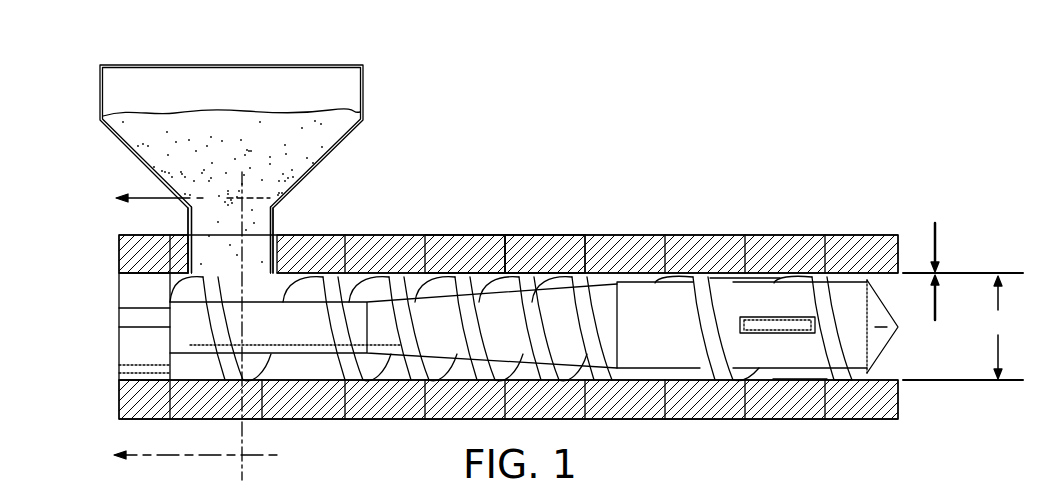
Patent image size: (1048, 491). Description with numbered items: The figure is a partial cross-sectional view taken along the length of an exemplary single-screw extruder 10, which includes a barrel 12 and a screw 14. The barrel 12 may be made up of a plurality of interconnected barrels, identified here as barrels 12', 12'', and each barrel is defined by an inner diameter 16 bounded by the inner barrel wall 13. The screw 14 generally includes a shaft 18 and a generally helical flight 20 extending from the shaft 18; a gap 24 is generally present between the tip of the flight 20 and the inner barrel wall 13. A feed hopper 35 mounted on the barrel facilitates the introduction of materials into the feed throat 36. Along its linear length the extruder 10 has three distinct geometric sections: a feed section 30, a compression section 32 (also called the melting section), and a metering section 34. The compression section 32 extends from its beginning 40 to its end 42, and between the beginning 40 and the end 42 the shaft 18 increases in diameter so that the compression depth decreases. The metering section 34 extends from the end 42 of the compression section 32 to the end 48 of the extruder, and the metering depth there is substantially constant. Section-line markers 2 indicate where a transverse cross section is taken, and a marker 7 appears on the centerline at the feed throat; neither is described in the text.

The extruder 10 is at (783, 157).
The barrel 12 is at (508, 294).
The barrel 12' is at (465, 223).
The barrel 12'' is at (545, 223).
The inner barrel wall 13 is at (840, 377).
The screw 14 is at (878, 360).
The inner diameter 16 is at (963, 328).
The shaft 18 is at (195, 325).
The helical flight 20 is at (313, 290).
The gap 24 is at (935, 223).
The feed section 30 is at (295, 328).
The compression section 32 is at (553, 350).
The metering section 34 is at (780, 343).
The feed hopper 35 is at (363, 102).
The feed throat 36 is at (217, 260).
The beginning of compression section 40 is at (377, 298).
The end of compression section 42 is at (618, 308).
The end of the extruder 48 is at (896, 297).
The section line 2 is at (184, 326).
The centerline 7 is at (227, 326).